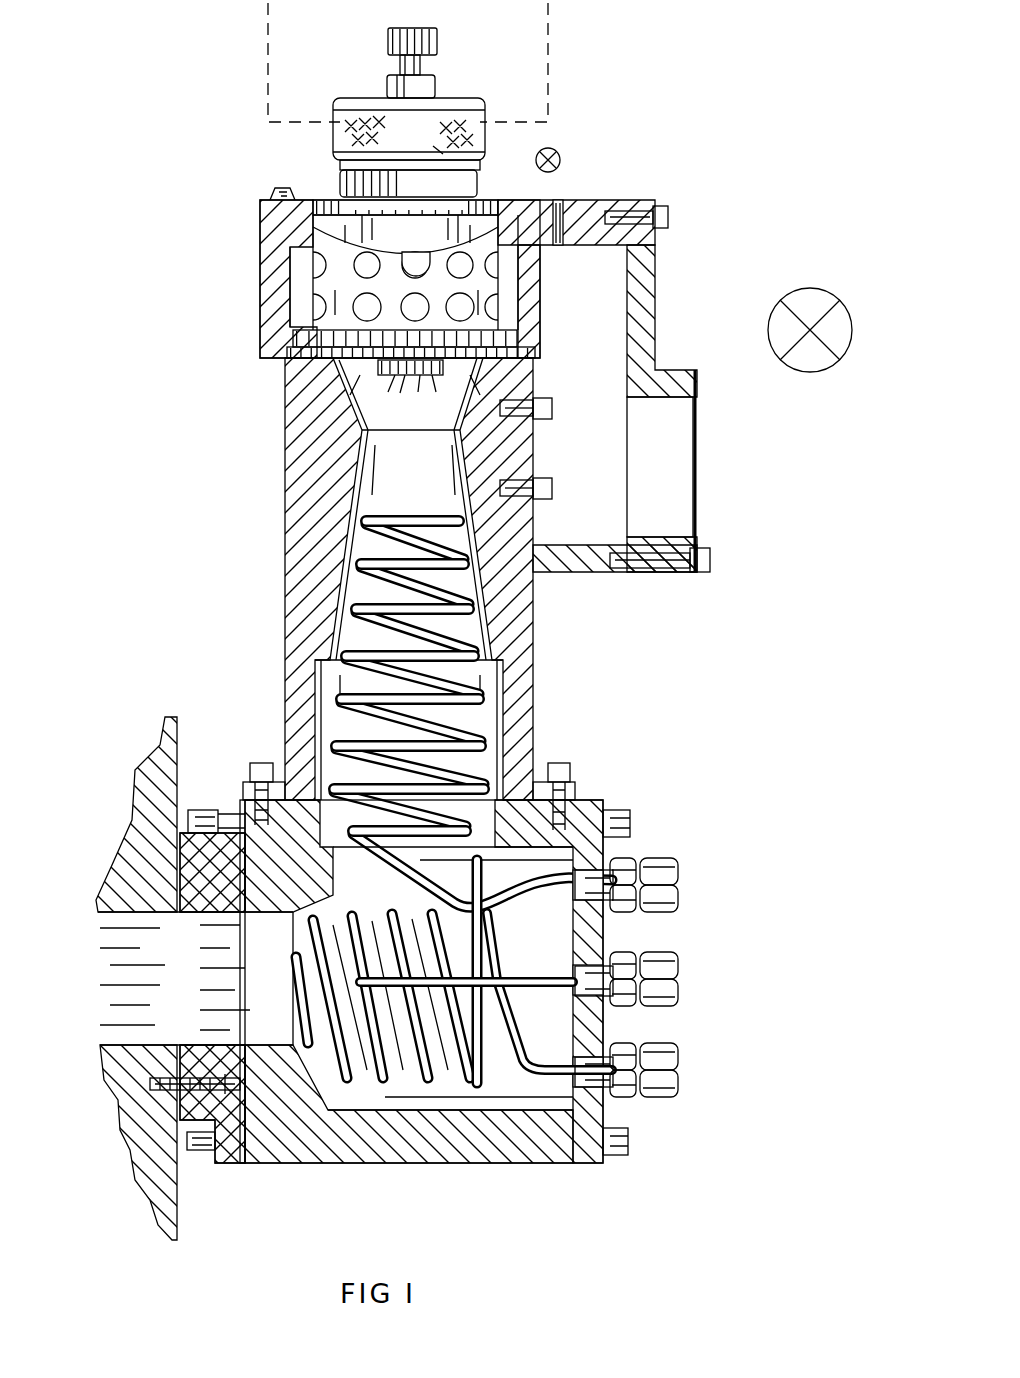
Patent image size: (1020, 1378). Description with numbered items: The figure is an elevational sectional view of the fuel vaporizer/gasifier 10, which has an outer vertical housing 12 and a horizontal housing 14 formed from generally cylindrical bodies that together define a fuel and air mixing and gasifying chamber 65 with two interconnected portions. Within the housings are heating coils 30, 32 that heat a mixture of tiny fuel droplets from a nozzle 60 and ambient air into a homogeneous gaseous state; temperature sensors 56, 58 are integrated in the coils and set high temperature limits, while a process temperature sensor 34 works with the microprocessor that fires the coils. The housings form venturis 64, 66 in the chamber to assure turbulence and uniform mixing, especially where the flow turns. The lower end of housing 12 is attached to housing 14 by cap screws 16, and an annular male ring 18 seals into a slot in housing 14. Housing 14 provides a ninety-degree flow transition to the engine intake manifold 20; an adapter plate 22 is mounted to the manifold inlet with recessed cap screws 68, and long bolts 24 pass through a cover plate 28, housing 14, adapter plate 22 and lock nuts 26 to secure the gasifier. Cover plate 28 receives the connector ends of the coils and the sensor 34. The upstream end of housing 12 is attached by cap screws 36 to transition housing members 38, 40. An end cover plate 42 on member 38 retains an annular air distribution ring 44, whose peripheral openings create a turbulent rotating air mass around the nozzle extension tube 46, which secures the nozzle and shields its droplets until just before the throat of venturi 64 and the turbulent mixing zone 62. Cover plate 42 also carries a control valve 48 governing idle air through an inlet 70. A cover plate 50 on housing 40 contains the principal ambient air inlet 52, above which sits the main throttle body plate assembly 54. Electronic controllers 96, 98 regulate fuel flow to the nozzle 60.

The fuel vaporizer/gasifier 10 is at (464, 527).
The vertical housing 12 is at (547, 638).
The horizontal housing 14 is at (460, 1168).
The cap screws 16 is at (562, 760).
The annular male ring 18 is at (285, 795).
The intake manifold 20 is at (108, 868).
The adapter plate 22 is at (228, 1163).
The long bolts 24 is at (632, 1143).
The lock nuts 26 is at (207, 810).
The cover plate 28 is at (618, 810).
The heating coil 30 is at (415, 514).
The heating coil 32 is at (302, 942).
The process temperature sensor 34 is at (535, 976).
The cap screws 36 is at (282, 188).
The transition housing member 38 is at (262, 263).
The transition housing member 40 is at (590, 577).
The end cover plate 42 is at (580, 212).
The annular air distribution ring 44 is at (507, 307).
The nozzle extension tube 46 is at (488, 200).
The control valve 48 is at (561, 154).
The cover plate 50 is at (666, 354).
The principal ambient air inlet 52 is at (665, 475).
The main throttle body plate assembly 54 is at (847, 363).
The temperature sensor 56 is at (680, 868).
The temperature sensor 58 is at (680, 1058).
The nozzle 60 is at (447, 100).
The turbulent mixing zone 62 is at (430, 466).
The venturi 64 is at (487, 483).
The fuel and air mixing and gasifying chamber 65 is at (480, 675).
The venturi 66 is at (450, 978).
The cap screws 68 is at (247, 1047).
The inlet 70 is at (558, 245).
The electronic controller 96 is at (258, 78).
The electronic controller 98 is at (558, 82).